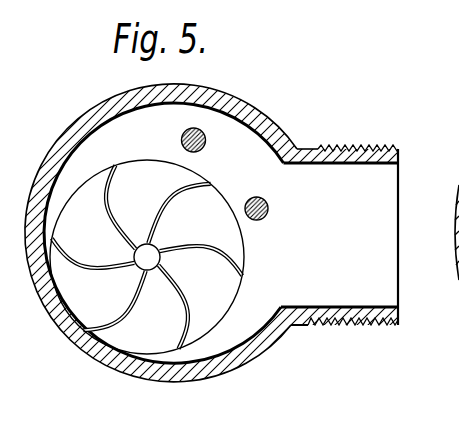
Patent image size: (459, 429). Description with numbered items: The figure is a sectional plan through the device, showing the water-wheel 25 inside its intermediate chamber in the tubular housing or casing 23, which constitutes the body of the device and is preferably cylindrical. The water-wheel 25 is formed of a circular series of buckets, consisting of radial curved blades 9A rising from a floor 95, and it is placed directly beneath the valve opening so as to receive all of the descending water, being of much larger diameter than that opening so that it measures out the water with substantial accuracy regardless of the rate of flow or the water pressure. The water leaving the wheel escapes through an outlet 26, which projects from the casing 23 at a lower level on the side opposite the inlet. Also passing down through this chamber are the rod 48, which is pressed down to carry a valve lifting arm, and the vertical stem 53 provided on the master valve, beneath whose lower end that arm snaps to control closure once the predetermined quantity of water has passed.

The tubular housing or casing 23 is at (86, 338).
The water-wheel 25 is at (223, 290).
The outlet 26 is at (339, 321).
The rod 48 is at (204, 146).
The vertical stem 53 is at (277, 199).
The floor 95 is at (137, 162).
The impeller blade 9A is at (75, 258).